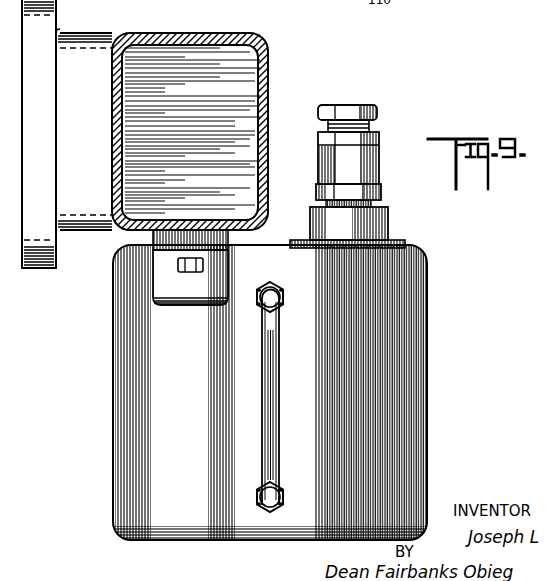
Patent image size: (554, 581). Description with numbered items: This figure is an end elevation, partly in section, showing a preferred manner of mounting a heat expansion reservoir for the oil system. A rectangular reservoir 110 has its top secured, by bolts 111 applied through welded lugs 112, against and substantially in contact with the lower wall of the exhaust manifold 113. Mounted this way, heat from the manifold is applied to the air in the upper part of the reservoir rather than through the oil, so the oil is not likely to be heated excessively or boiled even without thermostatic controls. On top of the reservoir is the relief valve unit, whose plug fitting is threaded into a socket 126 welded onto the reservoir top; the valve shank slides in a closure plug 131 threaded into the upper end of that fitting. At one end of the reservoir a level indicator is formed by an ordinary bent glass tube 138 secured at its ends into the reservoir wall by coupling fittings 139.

The rectangular reservoir 110 is at (410, 347).
The bolts 111 is at (191, 272).
The welded lugs 112 is at (222, 273).
The exhaust manifold 113 is at (268, 73).
The socket 126 is at (388, 228).
The closure plug 131 is at (378, 113).
The bent glass tube 138 is at (279, 378).
The coupling fittings 139 is at (286, 300).